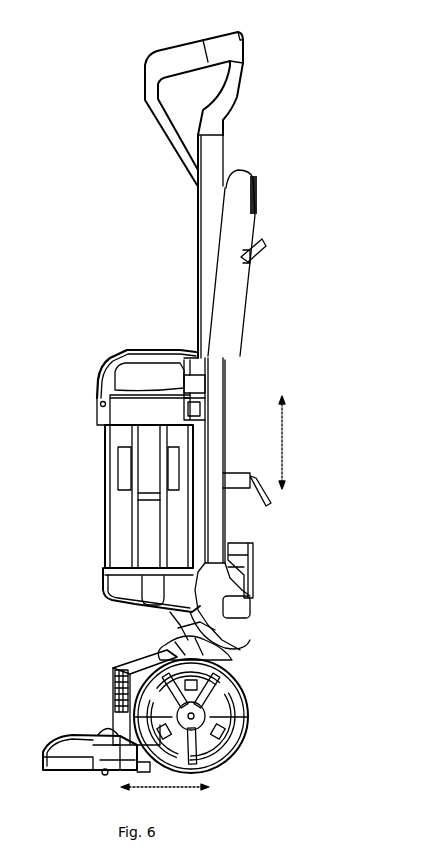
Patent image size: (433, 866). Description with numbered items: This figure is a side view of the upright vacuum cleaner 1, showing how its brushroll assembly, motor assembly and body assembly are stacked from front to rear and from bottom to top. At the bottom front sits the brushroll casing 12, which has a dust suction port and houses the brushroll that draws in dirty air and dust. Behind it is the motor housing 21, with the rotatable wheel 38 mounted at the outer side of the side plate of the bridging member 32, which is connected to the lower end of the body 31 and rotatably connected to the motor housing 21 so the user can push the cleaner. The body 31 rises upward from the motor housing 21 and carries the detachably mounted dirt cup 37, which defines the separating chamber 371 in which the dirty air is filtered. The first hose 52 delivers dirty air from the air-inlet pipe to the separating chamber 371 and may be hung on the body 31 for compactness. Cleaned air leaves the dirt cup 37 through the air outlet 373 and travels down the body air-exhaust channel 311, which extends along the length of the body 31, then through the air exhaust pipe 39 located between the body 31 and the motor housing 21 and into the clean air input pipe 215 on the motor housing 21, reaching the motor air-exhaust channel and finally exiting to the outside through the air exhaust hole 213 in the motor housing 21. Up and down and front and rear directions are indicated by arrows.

The upright vacuum cleaner 1 is at (151, 212).
The body 31 is at (213, 153).
The first hose 52 is at (232, 255).
The dirt cup 37 is at (104, 365).
The air outlet 373 is at (193, 385).
The separating chamber 371 is at (108, 489).
The body air-exhaust channel 311 is at (213, 461).
The air exhaust pipe 39 is at (234, 588).
The clean air input pipe 215 is at (176, 628).
The bridging member 32 is at (234, 652).
The motor housing 21 is at (144, 660).
The air exhaust hole 213 is at (114, 686).
The brushroll casing 12 is at (63, 736).
The rotatable wheel 38 is at (235, 697).